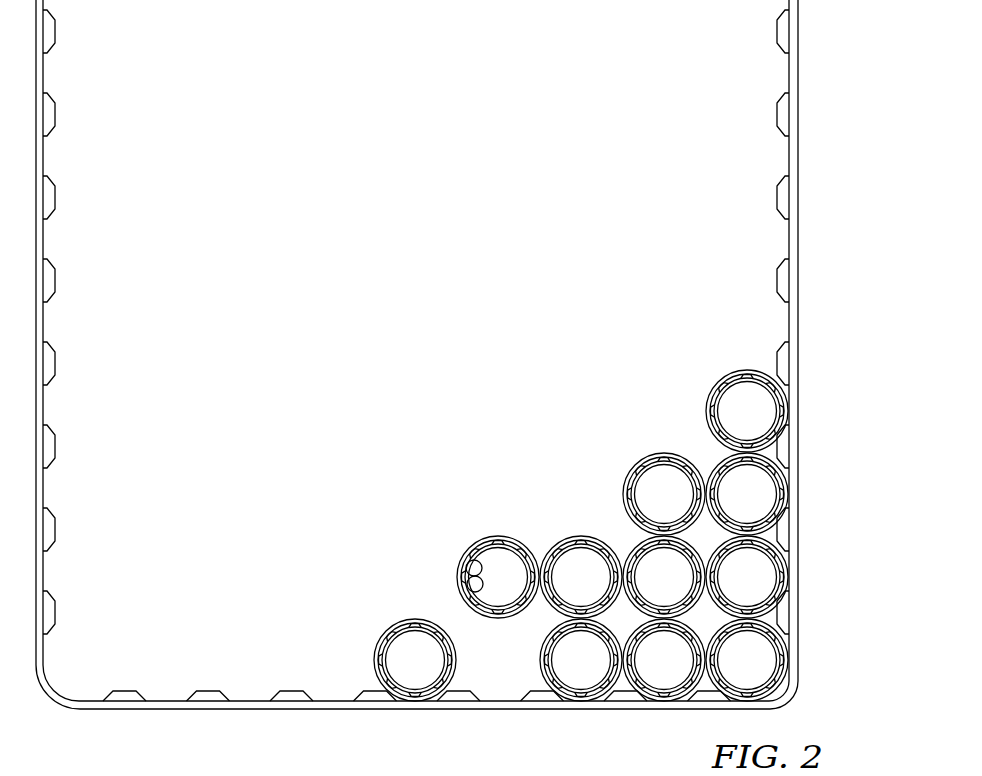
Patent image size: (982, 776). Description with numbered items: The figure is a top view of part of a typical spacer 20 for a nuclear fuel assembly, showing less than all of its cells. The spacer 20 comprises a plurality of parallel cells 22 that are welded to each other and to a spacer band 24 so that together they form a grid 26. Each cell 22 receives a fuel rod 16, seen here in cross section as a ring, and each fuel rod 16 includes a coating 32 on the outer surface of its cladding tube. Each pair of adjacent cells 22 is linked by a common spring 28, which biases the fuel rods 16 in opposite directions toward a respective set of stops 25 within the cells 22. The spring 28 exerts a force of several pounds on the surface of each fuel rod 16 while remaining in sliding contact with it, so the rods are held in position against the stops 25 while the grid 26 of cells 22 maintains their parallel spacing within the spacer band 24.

The spacer 20 is at (450, 383).
The spacer band 24 is at (250, 711).
The grid 26 is at (780, 546).
The fuel rod 16 is at (405, 662).
The spacer cell 22 is at (453, 553).
The coating 32 is at (486, 538).
The spring 28 is at (533, 577).
The stops 25 is at (461, 570).